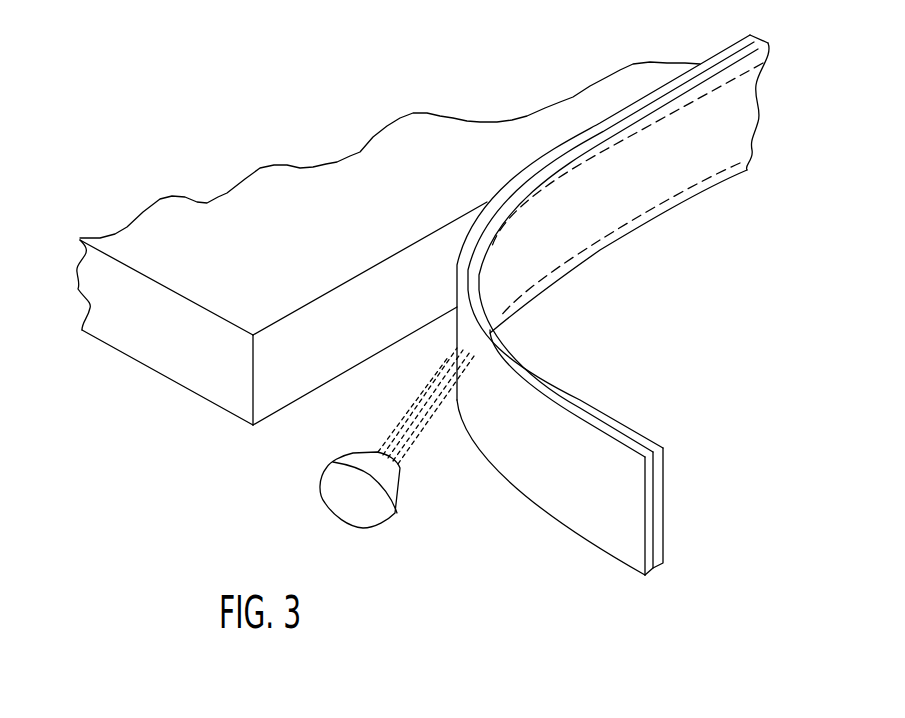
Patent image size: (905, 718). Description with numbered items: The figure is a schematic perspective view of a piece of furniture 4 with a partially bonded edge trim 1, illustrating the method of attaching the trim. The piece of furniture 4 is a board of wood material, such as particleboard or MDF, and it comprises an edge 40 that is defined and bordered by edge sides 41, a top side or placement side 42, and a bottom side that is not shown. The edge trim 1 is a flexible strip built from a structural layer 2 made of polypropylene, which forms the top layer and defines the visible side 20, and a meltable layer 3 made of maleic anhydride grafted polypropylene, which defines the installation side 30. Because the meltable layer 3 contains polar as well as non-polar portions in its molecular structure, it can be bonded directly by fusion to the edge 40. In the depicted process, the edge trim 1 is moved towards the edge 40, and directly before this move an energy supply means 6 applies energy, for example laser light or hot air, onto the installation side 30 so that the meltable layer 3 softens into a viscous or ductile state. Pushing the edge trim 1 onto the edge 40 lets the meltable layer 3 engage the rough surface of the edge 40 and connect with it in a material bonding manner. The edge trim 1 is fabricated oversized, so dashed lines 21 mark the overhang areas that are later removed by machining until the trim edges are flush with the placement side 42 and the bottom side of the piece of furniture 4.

The edge trim 1 is at (613, 330).
The structural layer 2 is at (700, 487).
The meltable layer 3 is at (620, 605).
The piece of furniture 4 is at (388, 269).
The energy supply means 6 is at (383, 553).
The visible side 20 is at (618, 251).
The dashed lines 21 is at (698, 250).
The installation side 30 is at (567, 406).
The edge 40 is at (250, 379).
The edge sides 41 is at (292, 446).
The placement side 42 is at (388, 198).